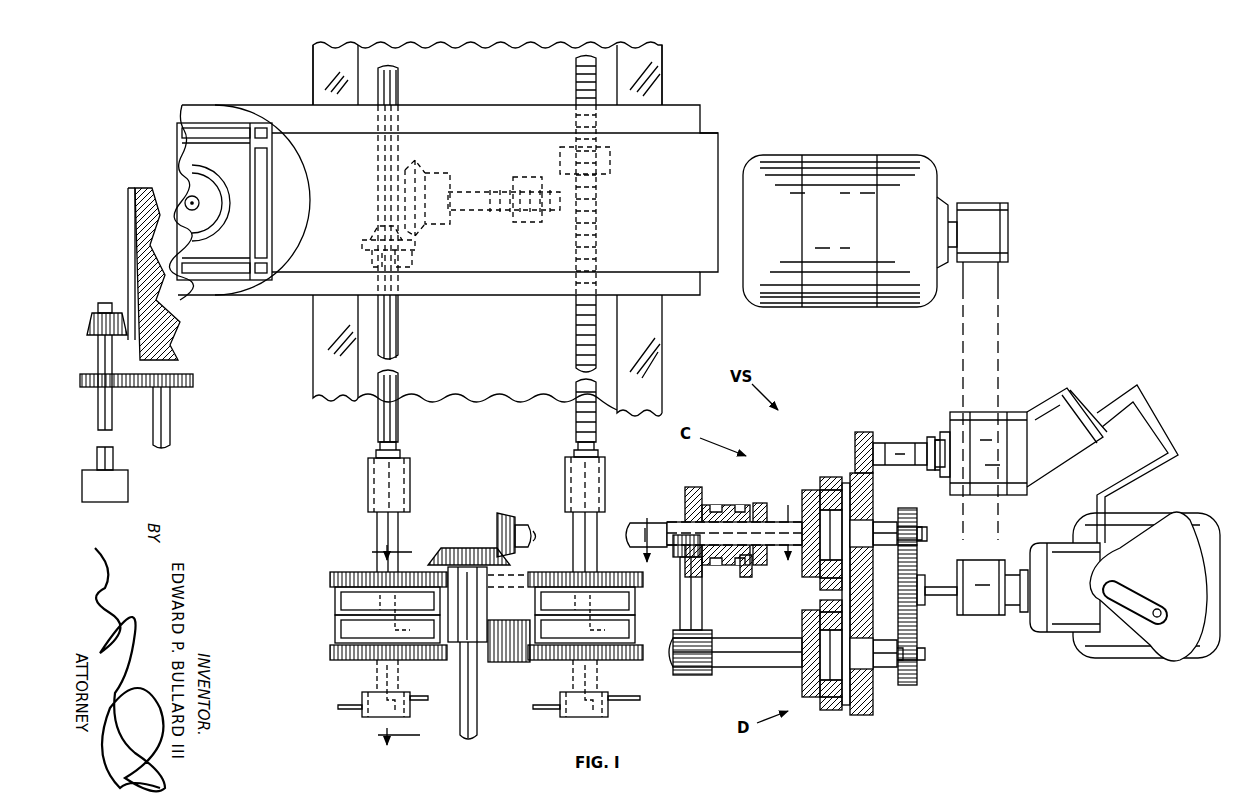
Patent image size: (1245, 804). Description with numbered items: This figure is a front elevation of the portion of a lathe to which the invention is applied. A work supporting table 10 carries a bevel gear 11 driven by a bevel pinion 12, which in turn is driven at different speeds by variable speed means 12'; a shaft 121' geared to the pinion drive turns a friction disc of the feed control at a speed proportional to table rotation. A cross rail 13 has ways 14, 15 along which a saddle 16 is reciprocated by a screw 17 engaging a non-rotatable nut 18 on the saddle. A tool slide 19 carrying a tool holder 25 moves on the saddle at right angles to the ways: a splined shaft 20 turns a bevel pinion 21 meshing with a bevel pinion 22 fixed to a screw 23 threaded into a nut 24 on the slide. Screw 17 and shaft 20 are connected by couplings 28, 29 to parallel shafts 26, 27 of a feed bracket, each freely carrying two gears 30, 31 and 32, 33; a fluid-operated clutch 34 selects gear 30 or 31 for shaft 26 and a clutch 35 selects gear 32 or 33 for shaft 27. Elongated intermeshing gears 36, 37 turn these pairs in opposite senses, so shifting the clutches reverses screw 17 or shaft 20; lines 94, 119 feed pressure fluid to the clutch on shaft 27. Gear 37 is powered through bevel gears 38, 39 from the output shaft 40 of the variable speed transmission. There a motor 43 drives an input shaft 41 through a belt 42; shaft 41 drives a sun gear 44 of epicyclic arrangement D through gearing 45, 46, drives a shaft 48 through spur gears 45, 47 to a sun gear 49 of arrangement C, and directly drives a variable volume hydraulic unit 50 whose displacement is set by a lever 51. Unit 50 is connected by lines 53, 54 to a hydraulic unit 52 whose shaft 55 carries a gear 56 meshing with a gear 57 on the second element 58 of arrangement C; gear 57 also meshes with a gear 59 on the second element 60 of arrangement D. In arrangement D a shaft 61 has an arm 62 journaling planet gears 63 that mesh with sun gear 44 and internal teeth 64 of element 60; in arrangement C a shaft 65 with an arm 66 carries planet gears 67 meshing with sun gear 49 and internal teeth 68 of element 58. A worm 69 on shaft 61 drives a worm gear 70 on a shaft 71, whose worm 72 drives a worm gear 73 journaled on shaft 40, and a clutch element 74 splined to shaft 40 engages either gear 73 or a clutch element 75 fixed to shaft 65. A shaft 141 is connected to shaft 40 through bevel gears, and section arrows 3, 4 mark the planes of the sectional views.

The section line 3- 3 is at (385, 645).
The section line 4- 4 is at (714, 526).
The work supporting table 10 is at (170, 332).
The bevel gear 11 is at (127, 313).
The bevel pinion 12 is at (118, 382).
The variable speed means 12' is at (121, 474).
The shaft 121' is at (187, 417).
The cross rail 13 is at (483, 378).
The way 14 is at (347, 330).
The way 15 is at (651, 326).
The saddle 16 is at (502, 287).
The screw 17 is at (580, 341).
The non-rotatable nut 18 is at (605, 166).
The tool slide 19 is at (508, 152).
The splined shaft 20 is at (394, 332).
The bevel pinion 21 is at (362, 238).
The bevel pinion 22 is at (447, 170).
The rotatable screw 23 is at (502, 190).
The nut 24 is at (522, 218).
The tool holder 25 is at (186, 114).
The shaft 26 is at (573, 521).
The shaft 27 is at (377, 521).
The coupling 28 is at (575, 483).
The coupling 29 is at (368, 482).
The gear 30 is at (528, 583).
The gear 31 is at (548, 661).
The gear 32 is at (330, 580).
The gear 33 is at (330, 656).
The fluid-operated clutch 34 is at (645, 613).
The clutch 35 is at (305, 628).
The elongated gear 36 is at (511, 661).
The elongated gear 37 is at (487, 608).
The bevel gear 38 is at (468, 548).
The bevel gear 39 is at (503, 516).
The output shaft 40 is at (520, 523).
The input shaft 41 is at (945, 595).
The belt 42 is at (960, 375).
The constant speed A.C. motor 43 is at (850, 242).
The sun gear 44 is at (805, 668).
The gear 45 is at (903, 621).
The gear 46 is at (905, 686).
The gear 47 is at (907, 508).
The shaft 48 is at (919, 531).
The sun gear 49 is at (860, 516).
The hydraulic unit 50 is at (1075, 600).
The lever 51 is at (1150, 575).
The hydraulic unit 52 is at (1070, 446).
The line 53 is at (1170, 445).
The line 54 is at (1148, 464).
The shaft 55 is at (908, 443).
The gear 56 is at (863, 432).
The gear 57 is at (857, 470).
The second element 58 is at (848, 483).
The gear 59 is at (862, 715).
The second element 60 is at (840, 710).
The shaft 61 is at (760, 640).
The arm 62 is at (805, 630).
The planet gear 63 is at (822, 613).
The internal gear teeth 64 is at (830, 712).
The shaft 65 is at (772, 503).
The arm 66 is at (805, 568).
The planet gear 67 is at (825, 492).
The internal gear teeth 68 is at (822, 478).
The worm 69 is at (690, 676).
The worm gear 70 is at (668, 656).
The shaft 71 is at (701, 608).
The worm 72 is at (680, 556).
The worm gear 73 is at (695, 487).
The clutch element 74 is at (733, 505).
The clutch element 75 is at (758, 565).
The line 94 is at (425, 700).
The line 119 is at (340, 710).
The shaft 141 is at (477, 735).